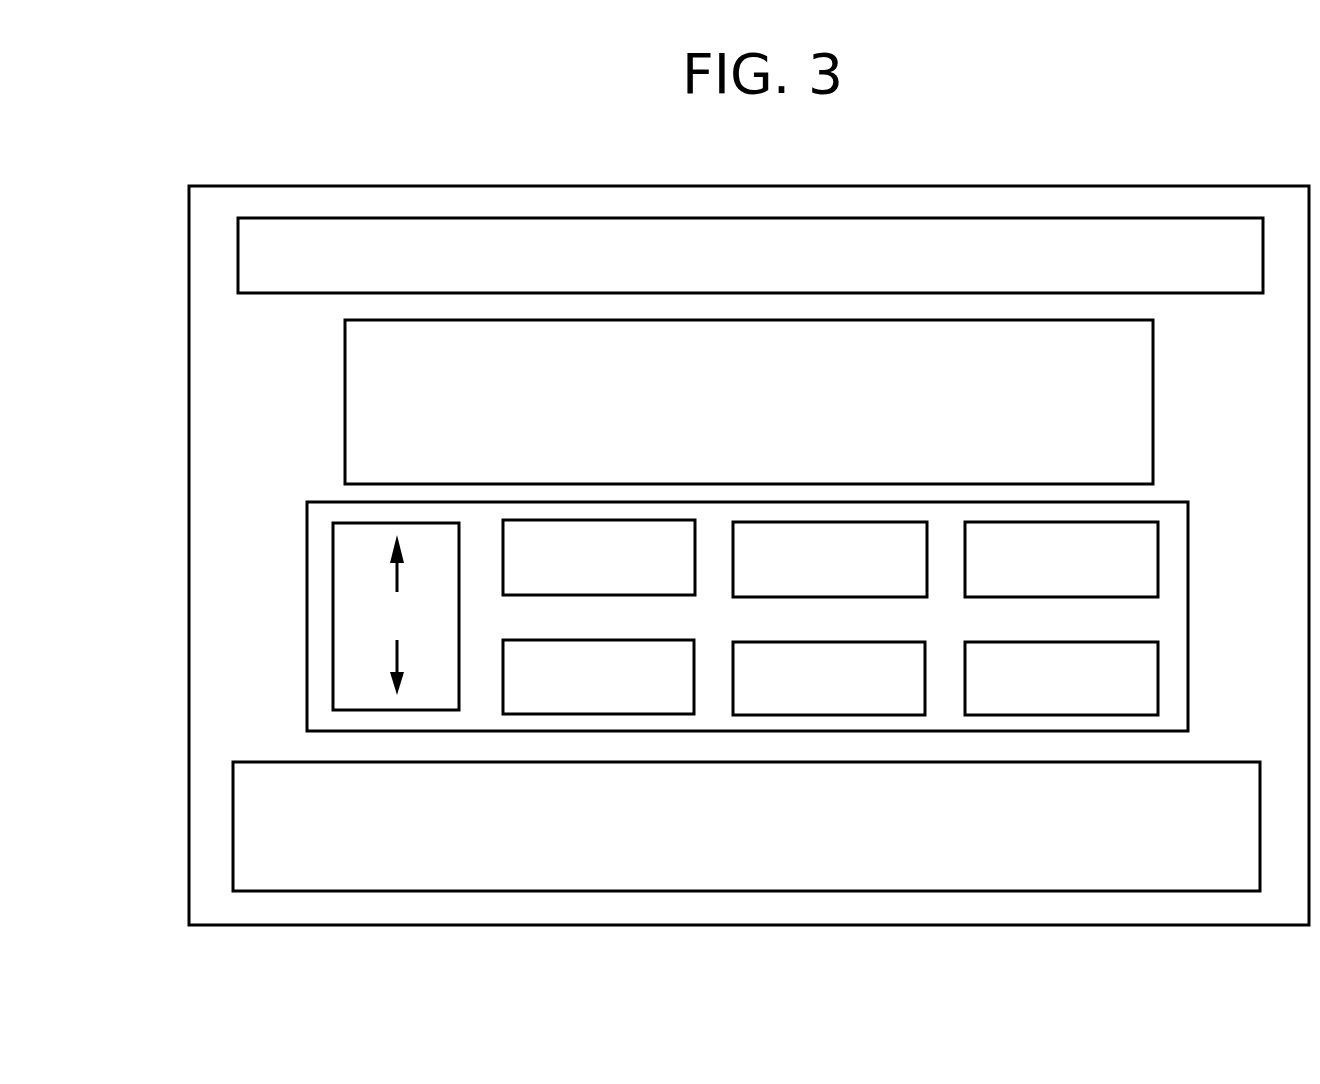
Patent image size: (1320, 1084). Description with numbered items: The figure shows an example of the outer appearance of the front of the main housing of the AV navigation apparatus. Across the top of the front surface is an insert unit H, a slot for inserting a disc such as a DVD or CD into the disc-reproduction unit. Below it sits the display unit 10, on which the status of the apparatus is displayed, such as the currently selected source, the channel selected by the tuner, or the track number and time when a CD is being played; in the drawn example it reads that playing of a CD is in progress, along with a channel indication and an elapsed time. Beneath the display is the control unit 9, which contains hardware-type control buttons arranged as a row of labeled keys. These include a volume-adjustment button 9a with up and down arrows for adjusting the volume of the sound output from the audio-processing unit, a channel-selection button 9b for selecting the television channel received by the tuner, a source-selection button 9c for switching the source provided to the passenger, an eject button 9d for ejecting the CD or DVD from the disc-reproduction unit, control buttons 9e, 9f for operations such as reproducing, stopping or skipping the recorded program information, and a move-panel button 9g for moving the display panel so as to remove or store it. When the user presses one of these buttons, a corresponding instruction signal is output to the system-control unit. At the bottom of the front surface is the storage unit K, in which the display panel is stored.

The insert unit H is at (268, 250).
The display unit 10 is at (345, 395).
The control unit 9 is at (333, 610).
The volume-adjustment button 9a is at (460, 614).
The channel-selection button 9b is at (552, 596).
The source-selection button 9c is at (783, 597).
The eject button 9d is at (1013, 597).
The control button 9e is at (641, 640).
The control button 9f is at (873, 642).
The move-panel button 9g is at (1105, 642).
The storage unit K is at (264, 796).